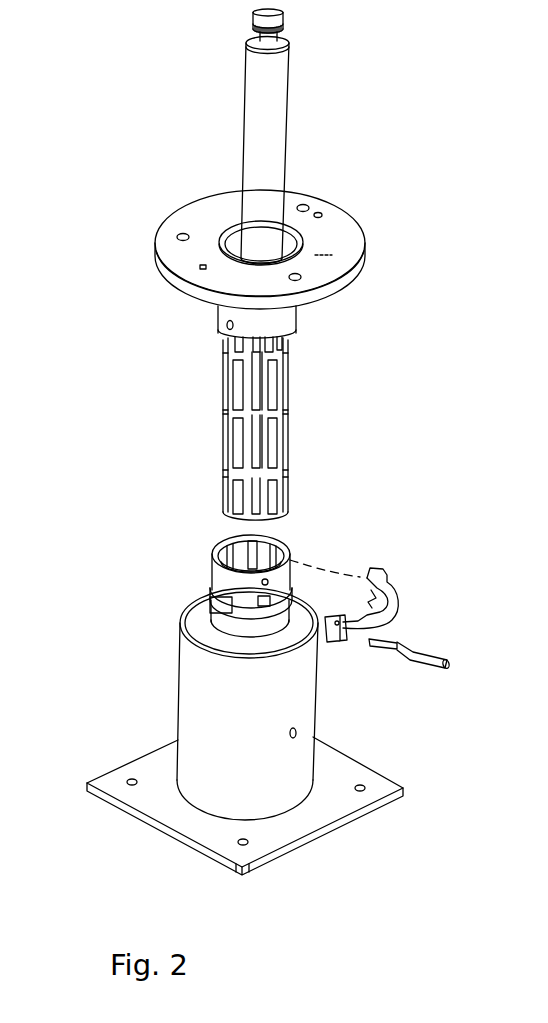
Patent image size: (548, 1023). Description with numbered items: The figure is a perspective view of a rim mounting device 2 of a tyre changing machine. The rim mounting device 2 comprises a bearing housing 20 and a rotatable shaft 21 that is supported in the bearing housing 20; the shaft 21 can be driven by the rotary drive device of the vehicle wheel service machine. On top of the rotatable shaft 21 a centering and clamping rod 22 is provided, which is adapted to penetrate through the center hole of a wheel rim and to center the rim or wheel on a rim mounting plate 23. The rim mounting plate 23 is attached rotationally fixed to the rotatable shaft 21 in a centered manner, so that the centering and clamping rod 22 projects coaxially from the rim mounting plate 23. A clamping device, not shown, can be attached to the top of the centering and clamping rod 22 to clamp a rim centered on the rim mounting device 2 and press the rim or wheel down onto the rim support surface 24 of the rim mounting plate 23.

The rim mounting device 2 is at (410, 126).
The bearing housing 20 is at (188, 682).
The rotatable shaft 21 is at (285, 413).
The centering and clamping rod 22 is at (270, 143).
The rim mounting plate 23 is at (167, 275).
The rim support surface 24 is at (324, 245).